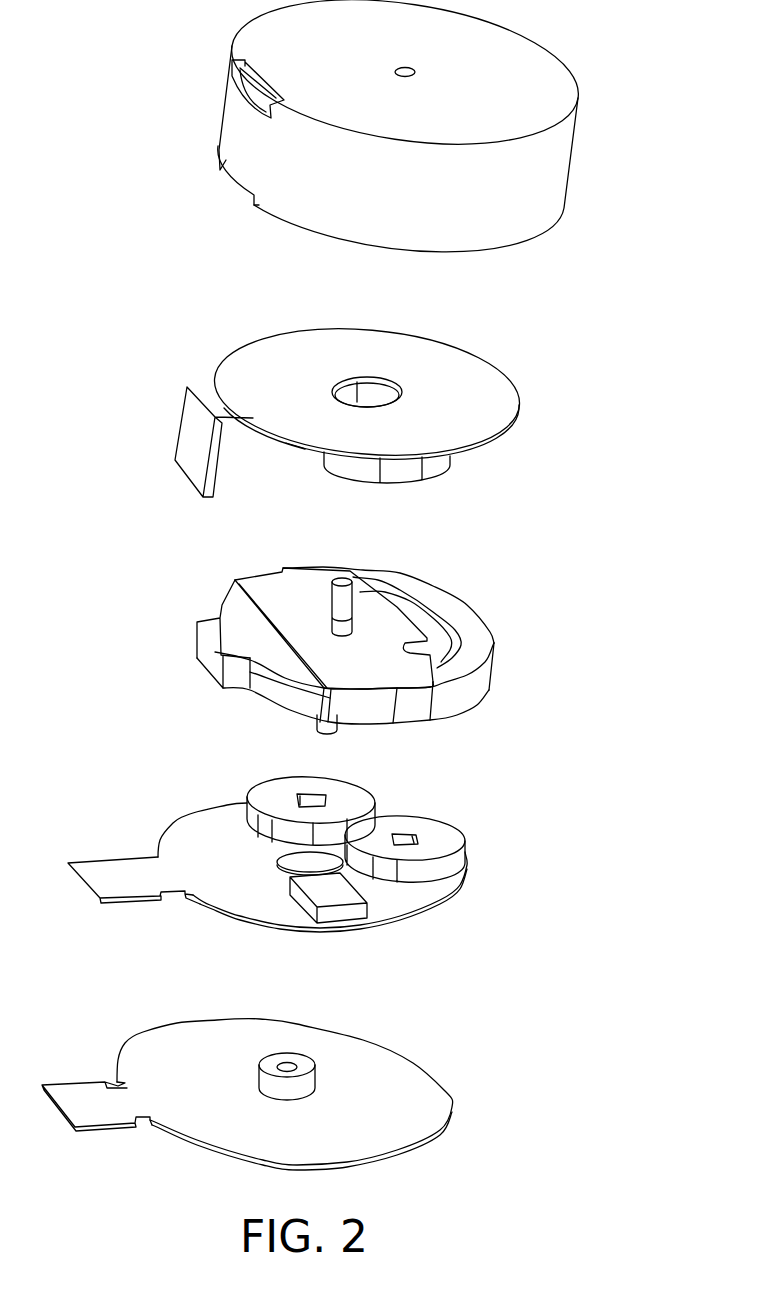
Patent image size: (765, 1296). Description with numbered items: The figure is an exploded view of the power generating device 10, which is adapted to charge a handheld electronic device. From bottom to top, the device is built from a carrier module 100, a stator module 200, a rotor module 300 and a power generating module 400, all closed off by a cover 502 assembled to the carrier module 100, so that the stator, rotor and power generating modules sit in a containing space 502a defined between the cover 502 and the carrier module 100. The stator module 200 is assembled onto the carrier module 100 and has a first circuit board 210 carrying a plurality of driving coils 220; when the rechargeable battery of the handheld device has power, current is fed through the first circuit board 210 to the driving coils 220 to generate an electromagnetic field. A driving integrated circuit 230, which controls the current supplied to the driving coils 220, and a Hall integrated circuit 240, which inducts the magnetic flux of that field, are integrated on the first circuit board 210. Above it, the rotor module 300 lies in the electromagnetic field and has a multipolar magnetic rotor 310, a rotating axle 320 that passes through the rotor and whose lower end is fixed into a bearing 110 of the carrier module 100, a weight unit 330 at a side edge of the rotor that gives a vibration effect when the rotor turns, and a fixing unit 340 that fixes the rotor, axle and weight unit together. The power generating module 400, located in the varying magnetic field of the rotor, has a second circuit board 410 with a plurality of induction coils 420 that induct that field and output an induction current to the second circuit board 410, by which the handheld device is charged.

The power generating device 10 is at (590, 1191).
The carrier module 100 is at (306, 1084).
The bearing 110 is at (303, 1072).
The stator module 200 is at (336, 873).
The first circuit board 210 is at (197, 825).
The driving coils 220 is at (355, 798).
The driving integrated circuit 230 is at (340, 888).
The Hall integrated circuit 240 is at (318, 892).
The rotor module 300 is at (396, 628).
The multipolar magnetic rotor 310 is at (270, 690).
The rotating axle 320 is at (343, 595).
The weight unit 330 is at (475, 648).
The fixing unit 340 is at (308, 573).
The power generating module 400 is at (404, 400).
The second circuit board 410 is at (423, 362).
The induction coils 420 is at (440, 463).
The cover 502 is at (548, 73).
The containing space 502a is at (284, 251).